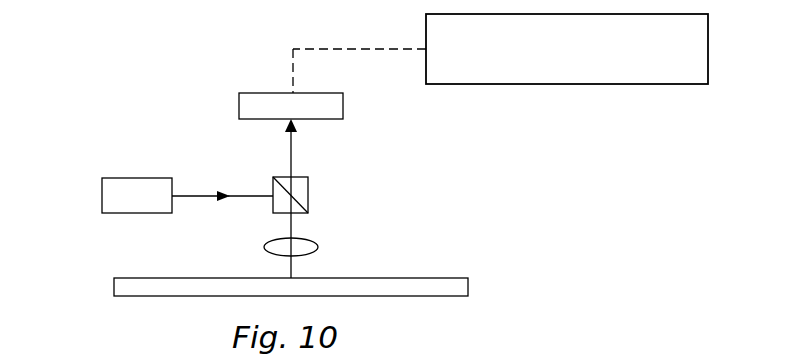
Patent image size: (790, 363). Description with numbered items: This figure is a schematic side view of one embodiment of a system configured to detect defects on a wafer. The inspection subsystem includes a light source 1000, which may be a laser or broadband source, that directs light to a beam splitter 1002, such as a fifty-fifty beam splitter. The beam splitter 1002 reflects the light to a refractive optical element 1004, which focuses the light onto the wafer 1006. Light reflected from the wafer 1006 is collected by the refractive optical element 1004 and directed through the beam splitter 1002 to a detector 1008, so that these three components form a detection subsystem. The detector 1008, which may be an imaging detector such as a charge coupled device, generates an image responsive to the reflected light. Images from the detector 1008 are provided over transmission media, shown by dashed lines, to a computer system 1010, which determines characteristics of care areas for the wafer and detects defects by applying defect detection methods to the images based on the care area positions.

The light source 1000 is at (102, 195).
The beam splitter 1002 is at (308, 187).
The refractive optical element 1004 is at (315, 242).
The wafer 1006 is at (125, 278).
The detector 1008 is at (239, 108).
The computer system 1010 is at (500, 53).